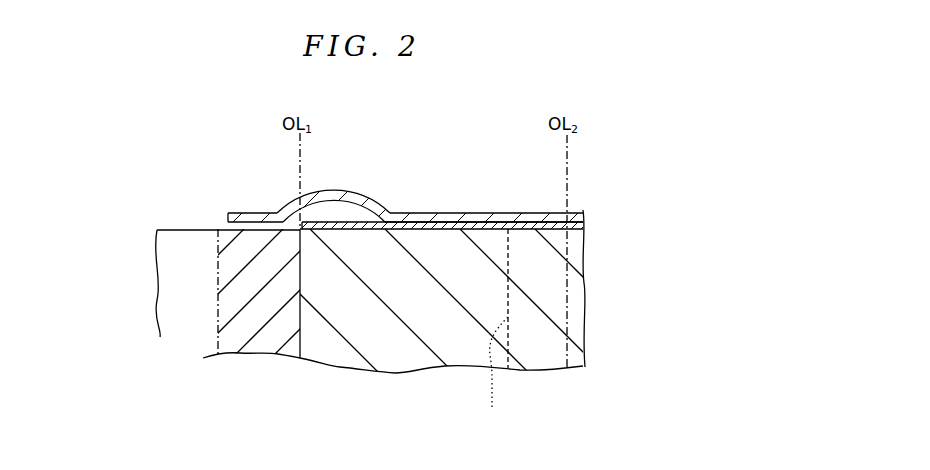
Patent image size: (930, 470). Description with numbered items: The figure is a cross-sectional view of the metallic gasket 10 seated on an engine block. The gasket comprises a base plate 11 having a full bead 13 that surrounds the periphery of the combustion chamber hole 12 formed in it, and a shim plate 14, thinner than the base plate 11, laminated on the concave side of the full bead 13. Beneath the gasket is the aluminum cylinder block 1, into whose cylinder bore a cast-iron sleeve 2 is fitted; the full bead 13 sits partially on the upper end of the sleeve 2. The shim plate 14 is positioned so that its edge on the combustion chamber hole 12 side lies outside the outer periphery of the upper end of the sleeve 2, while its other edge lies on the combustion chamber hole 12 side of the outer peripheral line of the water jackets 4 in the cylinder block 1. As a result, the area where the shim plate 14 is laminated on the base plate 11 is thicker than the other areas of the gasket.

The aluminum cylinder block 1 is at (401, 369).
The cast-iron sleeve 2 is at (228, 278).
The water jackets 4 is at (496, 330).
The metallic gasket 10 is at (388, 165).
The base plate 11 is at (472, 213).
The combustion chamber hole 12 is at (228, 218).
The full bead 13 is at (334, 196).
The shim plate 14 is at (361, 226).